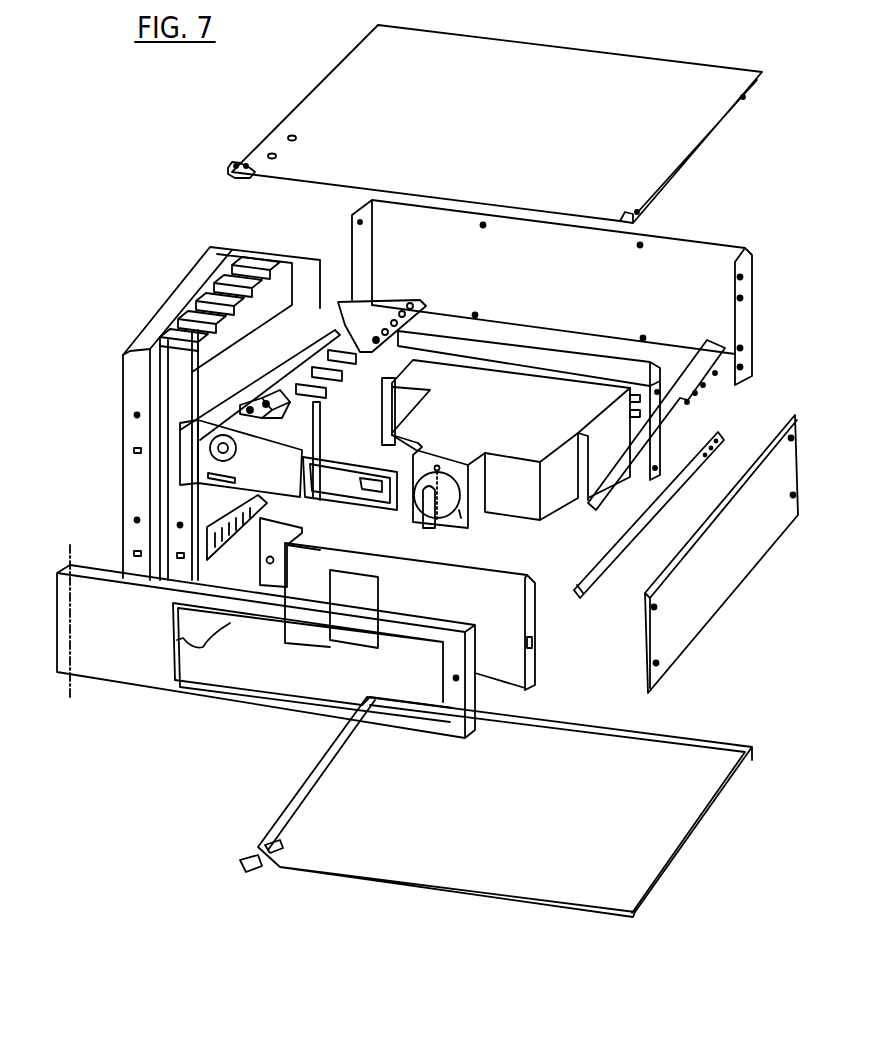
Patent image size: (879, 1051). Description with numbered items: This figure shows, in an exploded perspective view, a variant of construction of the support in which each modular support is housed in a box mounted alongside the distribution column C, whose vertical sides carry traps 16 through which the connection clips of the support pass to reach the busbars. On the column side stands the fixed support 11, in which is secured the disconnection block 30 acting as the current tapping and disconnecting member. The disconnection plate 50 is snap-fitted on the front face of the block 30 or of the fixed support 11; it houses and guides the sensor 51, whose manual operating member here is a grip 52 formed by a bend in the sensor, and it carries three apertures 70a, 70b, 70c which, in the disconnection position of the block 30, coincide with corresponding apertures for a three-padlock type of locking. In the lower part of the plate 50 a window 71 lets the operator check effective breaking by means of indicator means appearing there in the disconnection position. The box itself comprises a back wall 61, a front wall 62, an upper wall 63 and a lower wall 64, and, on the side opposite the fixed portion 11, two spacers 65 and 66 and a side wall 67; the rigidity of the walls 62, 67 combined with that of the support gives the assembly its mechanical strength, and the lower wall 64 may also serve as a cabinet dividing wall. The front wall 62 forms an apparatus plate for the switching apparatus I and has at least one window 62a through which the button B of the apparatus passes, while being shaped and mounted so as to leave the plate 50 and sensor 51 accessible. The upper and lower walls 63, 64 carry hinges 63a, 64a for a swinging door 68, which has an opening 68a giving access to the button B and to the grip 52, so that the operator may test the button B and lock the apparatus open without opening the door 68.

The distribution column C is at (151, 318).
The fixed support 11 is at (345, 300).
The traps 16 is at (222, 537).
The disconnection block 30 is at (362, 388).
The disconnection plate 50 is at (283, 490).
The sensor 51 is at (355, 500).
The operating grip 52 is at (372, 482).
The back wall 61 is at (575, 292).
The front wall 62 is at (494, 611).
The window 62a is at (370, 598).
The upper wall 63 is at (520, 121).
The hinge 63a is at (232, 158).
The lower wall 64 is at (528, 816).
The hinge 64a is at (243, 870).
The spacer 65 is at (700, 367).
The spacer 66 is at (688, 473).
The side wall 67 is at (751, 561).
The swinging door 68 is at (139, 641).
The opening 68a is at (250, 690).
The aperture 70a is at (247, 405).
The aperture 70b is at (258, 405).
The aperture 70c is at (291, 417).
The window 71 is at (213, 488).
The switching apparatus I is at (494, 419).
The button B is at (455, 512).